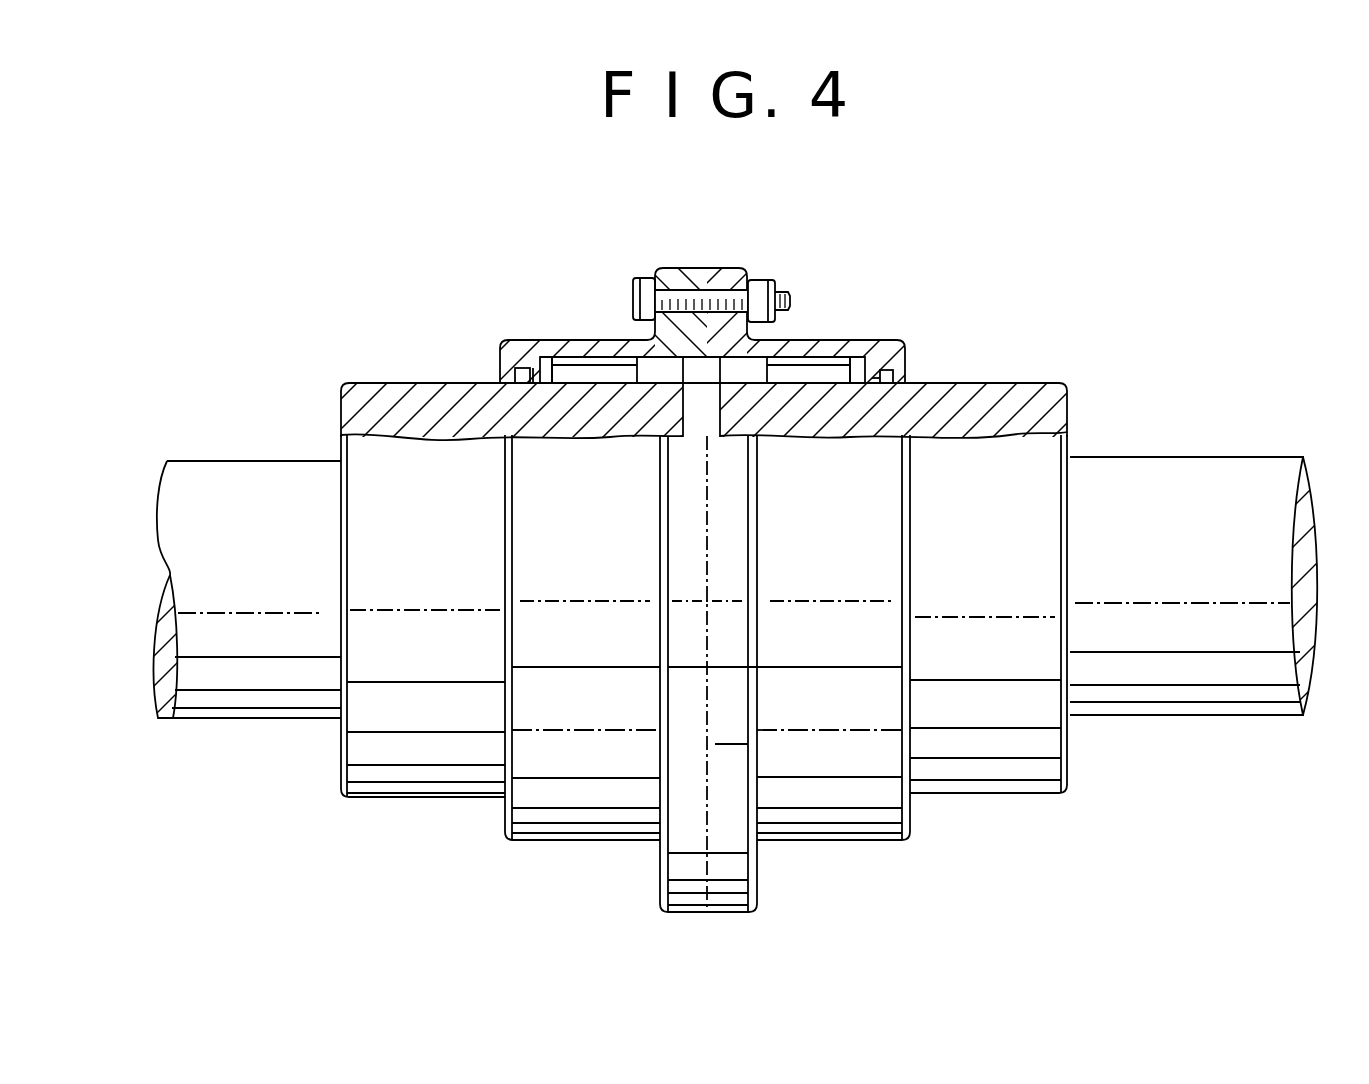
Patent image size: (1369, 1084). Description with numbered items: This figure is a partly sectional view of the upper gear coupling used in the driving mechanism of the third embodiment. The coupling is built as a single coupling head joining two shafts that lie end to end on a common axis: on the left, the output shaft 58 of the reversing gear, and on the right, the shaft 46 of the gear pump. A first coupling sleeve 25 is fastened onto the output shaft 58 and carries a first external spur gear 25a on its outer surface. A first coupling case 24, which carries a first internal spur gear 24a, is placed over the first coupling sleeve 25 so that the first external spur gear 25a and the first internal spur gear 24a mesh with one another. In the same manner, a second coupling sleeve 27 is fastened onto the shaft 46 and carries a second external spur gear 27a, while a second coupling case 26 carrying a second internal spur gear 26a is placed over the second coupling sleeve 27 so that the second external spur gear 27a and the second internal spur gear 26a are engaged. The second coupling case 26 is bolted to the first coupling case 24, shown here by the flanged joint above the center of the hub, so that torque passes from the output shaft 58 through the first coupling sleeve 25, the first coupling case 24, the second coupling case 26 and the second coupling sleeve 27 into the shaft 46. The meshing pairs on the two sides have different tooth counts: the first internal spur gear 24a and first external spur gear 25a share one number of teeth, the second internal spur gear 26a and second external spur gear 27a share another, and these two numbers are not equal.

The first coupling case 24 is at (592, 336).
The first internal spur gear 24a is at (567, 360).
The first coupling sleeve 25 is at (380, 376).
The first external spur gear 25a is at (588, 376).
The second coupling case 26 is at (868, 335).
The second internal spur gear 26a is at (805, 360).
The second coupling sleeve 27 is at (1002, 376).
The second external spur gear 27a is at (820, 376).
The shaft of the gear pump 46 is at (1160, 694).
The output shaft of the reversing gear 58 is at (248, 709).